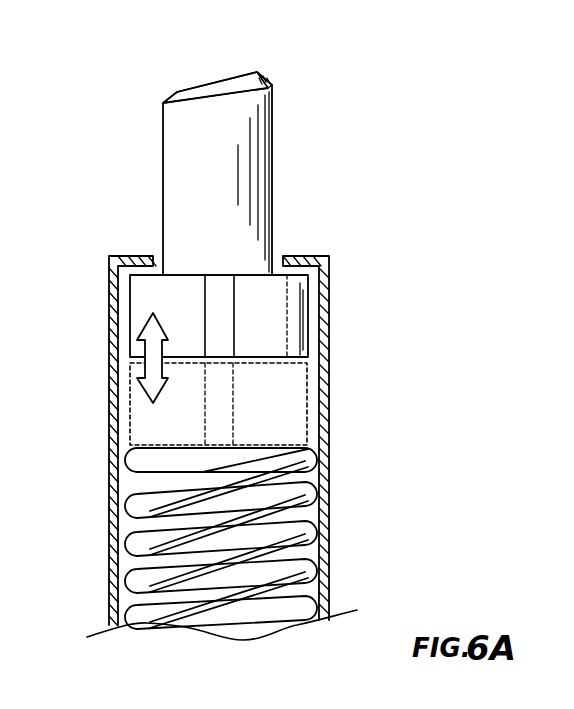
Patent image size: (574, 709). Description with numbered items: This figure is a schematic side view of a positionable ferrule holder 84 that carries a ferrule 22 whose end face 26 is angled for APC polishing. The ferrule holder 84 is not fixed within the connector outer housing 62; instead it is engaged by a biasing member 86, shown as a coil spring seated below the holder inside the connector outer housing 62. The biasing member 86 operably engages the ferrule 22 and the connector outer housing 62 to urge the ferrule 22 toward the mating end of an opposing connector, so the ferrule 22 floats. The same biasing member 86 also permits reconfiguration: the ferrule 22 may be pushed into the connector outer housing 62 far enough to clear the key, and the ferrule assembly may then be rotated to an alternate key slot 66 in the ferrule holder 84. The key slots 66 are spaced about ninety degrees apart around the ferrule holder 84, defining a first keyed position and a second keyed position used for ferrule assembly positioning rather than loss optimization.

The ferrule 22 is at (217, 144).
The end face 26 is at (207, 65).
The connector outer housing 62 is at (108, 402).
The key slot 66 is at (225, 307).
The ferrule holder 84 is at (265, 316).
The biasing member 86 is at (310, 497).